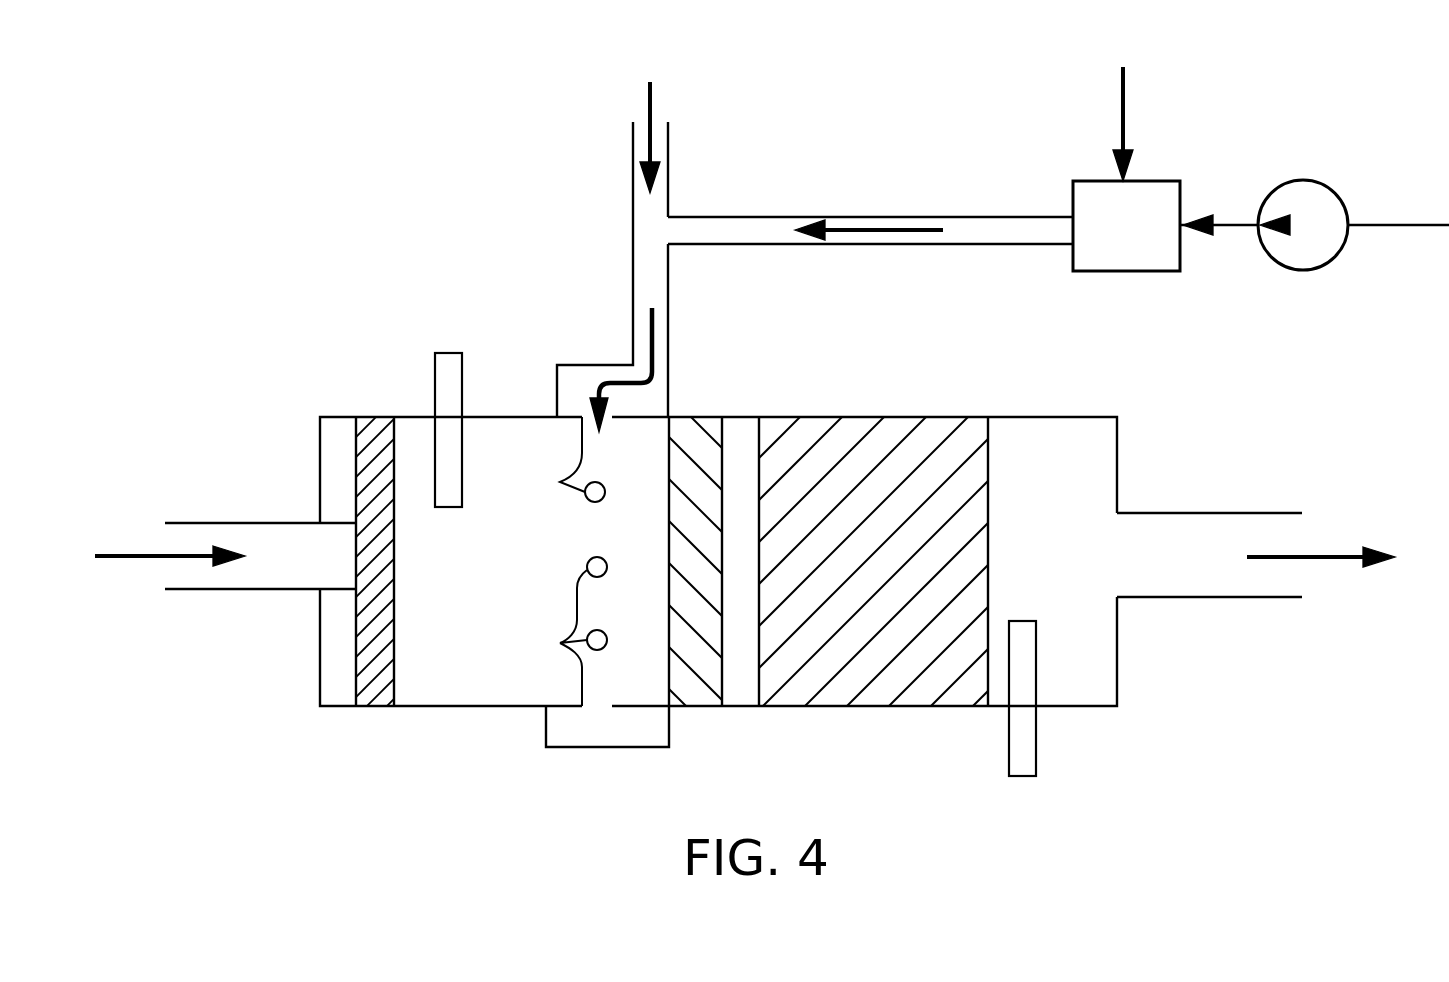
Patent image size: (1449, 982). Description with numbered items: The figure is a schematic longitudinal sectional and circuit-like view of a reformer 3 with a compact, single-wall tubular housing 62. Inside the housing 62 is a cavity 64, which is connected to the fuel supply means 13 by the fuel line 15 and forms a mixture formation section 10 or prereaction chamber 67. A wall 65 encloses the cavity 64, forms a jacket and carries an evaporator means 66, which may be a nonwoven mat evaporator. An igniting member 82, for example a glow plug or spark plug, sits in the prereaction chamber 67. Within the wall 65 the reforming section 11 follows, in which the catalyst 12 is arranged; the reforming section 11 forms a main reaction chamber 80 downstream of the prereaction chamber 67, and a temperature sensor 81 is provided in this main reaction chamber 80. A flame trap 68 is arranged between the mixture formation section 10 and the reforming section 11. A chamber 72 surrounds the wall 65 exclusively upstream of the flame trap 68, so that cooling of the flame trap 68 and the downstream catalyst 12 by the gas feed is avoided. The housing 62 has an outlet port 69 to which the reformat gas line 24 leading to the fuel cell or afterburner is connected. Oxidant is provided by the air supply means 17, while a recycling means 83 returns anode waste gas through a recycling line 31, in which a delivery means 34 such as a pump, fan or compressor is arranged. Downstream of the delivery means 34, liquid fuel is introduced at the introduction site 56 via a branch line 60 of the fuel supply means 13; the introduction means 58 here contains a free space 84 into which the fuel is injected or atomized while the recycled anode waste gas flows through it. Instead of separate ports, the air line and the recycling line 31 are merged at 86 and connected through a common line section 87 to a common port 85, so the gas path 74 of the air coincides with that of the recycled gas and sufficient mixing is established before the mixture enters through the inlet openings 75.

The reformer 3 is at (423, 795).
The mixture formation section 10 is at (428, 685).
The reforming section 11 is at (1070, 438).
The catalyst 12 is at (668, 182).
The fuel supply means 13 is at (265, 590).
The fuel line 15 is at (270, 523).
The air supply means 17 is at (632, 178).
The reformat gas line 24 is at (1190, 513).
The recycling line 31 is at (780, 217).
The delivery means 34 is at (1303, 181).
The introduction site 56 is at (1093, 181).
The introduction means 58 is at (1097, 273).
The branch line 60 is at (1127, 103).
The tubular housing 62 is at (531, 417).
The cavity 64 is at (448, 572).
The wall 65 is at (500, 706).
The evaporator means 66 is at (387, 598).
The prereaction chamber 67 is at (645, 545).
The flame trap 68 is at (688, 698).
The outlet port 69 is at (1117, 597).
The chamber 72 is at (603, 737).
The gas path 74 is at (653, 342).
The inlet openings 75 is at (565, 561).
The main reaction chamber 80 is at (1040, 572).
The temperature sensor 81 is at (1036, 645).
The igniting member 82 is at (435, 487).
The recycling means 83 is at (998, 216).
The free space 84 is at (1138, 236).
The common port 85 is at (669, 417).
The merging point 86 is at (668, 246).
The common line section 87 is at (632, 278).